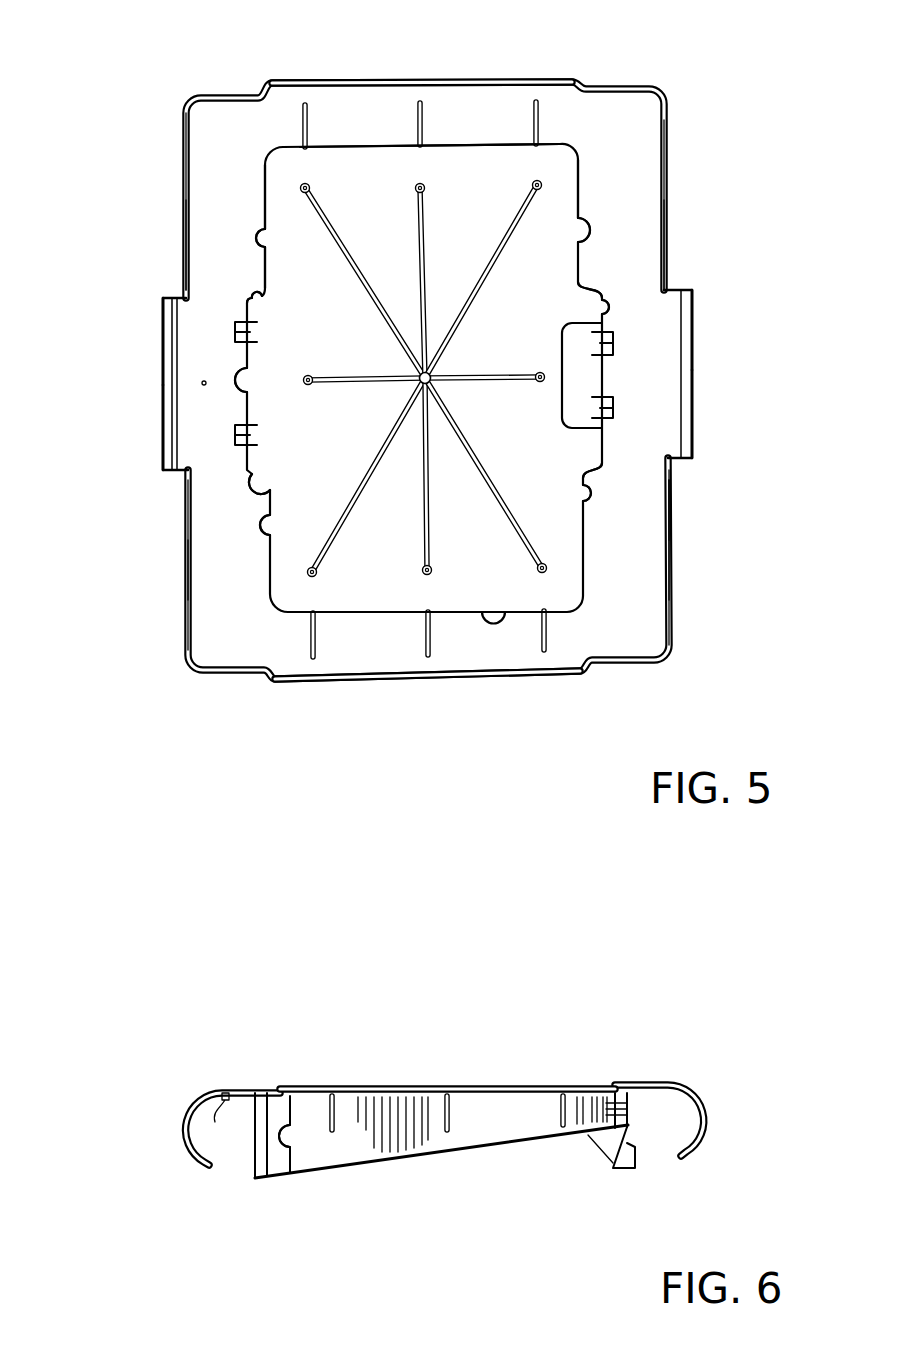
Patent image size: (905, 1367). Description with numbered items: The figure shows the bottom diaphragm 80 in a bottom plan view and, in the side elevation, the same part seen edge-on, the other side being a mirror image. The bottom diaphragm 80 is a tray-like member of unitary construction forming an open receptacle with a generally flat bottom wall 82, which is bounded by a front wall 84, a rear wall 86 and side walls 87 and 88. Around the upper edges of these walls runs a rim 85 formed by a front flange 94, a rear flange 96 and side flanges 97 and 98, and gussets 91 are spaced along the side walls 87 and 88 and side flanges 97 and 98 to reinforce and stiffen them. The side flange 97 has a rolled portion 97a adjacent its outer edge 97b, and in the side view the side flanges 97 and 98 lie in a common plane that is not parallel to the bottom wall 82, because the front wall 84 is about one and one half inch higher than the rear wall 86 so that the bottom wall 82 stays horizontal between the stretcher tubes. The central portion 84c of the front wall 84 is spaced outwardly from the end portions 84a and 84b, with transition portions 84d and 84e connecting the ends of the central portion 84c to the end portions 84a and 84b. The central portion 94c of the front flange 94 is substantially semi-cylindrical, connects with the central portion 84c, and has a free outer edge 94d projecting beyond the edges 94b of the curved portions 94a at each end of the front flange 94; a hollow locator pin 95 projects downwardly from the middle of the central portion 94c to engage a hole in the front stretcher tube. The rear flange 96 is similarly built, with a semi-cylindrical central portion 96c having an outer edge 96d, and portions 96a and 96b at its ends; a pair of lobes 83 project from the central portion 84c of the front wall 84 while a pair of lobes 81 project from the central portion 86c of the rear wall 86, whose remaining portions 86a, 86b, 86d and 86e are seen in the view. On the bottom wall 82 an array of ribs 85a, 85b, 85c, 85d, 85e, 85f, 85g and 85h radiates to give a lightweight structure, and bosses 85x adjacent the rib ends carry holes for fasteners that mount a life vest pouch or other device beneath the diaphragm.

In FIG. 5, the bottom diaphragm 80 is at (645, 68).
In FIG. 6, the bottom diaphragm 80 is at (351, 1082).
In FIG. 5, the lobes 81 is at (613, 348).
In FIG. 6, the lobes 81 is at (640, 1168).
In FIG. 5, the bottom wall 82 is at (350, 319).
In FIG. 6, the bottom wall 82 is at (292, 1178).
In FIG. 5, the lobes 83 is at (237, 322).
In FIG. 6, the lobes 83 is at (258, 1174).
In FIG. 5, the front wall 84 is at (265, 210).
In FIG. 6, the front wall 84 is at (272, 1135).
In FIG. 5, the end portion of front wall 84a is at (257, 244).
In FIG. 5, the end portion of front wall 84b is at (272, 530).
In FIG. 6, the end portion of front wall 84b is at (290, 1145).
In FIG. 5, the central portion of front wall 84c is at (255, 370).
In FIG. 6, the central portion of front wall 84c is at (258, 1147).
In FIG. 5, the transition portion of front wall 84d is at (262, 301).
In FIG. 5, the transition portion of front wall 84e is at (270, 490).
In FIG. 6, the transition portion of front wall 84e is at (265, 1092).
In FIG. 5, the rim 85 is at (647, 134).
In FIG. 6, the rim 85 is at (640, 1077).
In FIG. 5, the rib 85a is at (345, 520).
In FIG. 6, the rib 85a is at (380, 1170).
In FIG. 5, the rib 85b is at (500, 241).
In FIG. 5, the rib 85c is at (328, 226).
In FIG. 5, the rib 85d is at (480, 459).
In FIG. 6, the rib 85d is at (533, 1143).
In FIG. 5, the rib 85e is at (423, 487).
In FIG. 5, the rib 85f is at (420, 223).
In FIG. 5, the rib 85g is at (363, 382).
In FIG. 5, the right horizontal arm 85h is at (495, 381).
In FIG. 5, the bosses 85x is at (310, 184).
In FIG. 6, the bosses 85x is at (342, 1174).
In FIG. 5, the rear wall 86 is at (580, 197).
In FIG. 6, the rear wall 86 is at (630, 1118).
In FIG. 5, the right wall notch 86a is at (587, 244).
In FIG. 5, the right wall lower notch 86b is at (583, 488).
In FIG. 5, the central portion of rear wall 86c is at (600, 302).
In FIG. 5, the right wall step 86d is at (592, 286).
In FIG. 5, the right wall lower step 86e is at (598, 471).
In FIG. 6, the right wall lower step 86e is at (608, 1165).
In FIG. 5, the side wall 87 is at (378, 142).
In FIG. 6, the side wall 87 is at (492, 1108).
In FIG. 5, the side wall 88 is at (482, 612).
In FIG. 5, the gussets 91 is at (308, 116).
In FIG. 6, the gussets 91 is at (328, 1118).
In FIG. 5, the front flange 94 is at (222, 616).
In FIG. 6, the front flange 94 is at (238, 1094).
In FIG. 5, the curved portions of front flange 94a is at (210, 152).
In FIG. 6, the curved portions of front flange 94a is at (207, 1096).
In FIG. 5, the edges of curved portions 94b is at (180, 240).
In FIG. 6, the edges of curved portions 94b is at (174, 1098).
In FIG. 5, the central portion of front flange 94c is at (170, 356).
In FIG. 6, the central portion of front flange 94c is at (186, 1138).
In FIG. 5, the free outer edge 94d is at (170, 437).
In FIG. 6, the free outer edge 94d is at (199, 1162).
In FIG. 6, the locator pin 95 is at (214, 1123).
In FIG. 5, the rear flange 96 is at (627, 613).
In FIG. 6, the rear flange 96 is at (659, 1120).
In FIG. 5, the right rail upper portion 96a is at (645, 213).
In FIG. 6, the right rail upper portion 96a is at (697, 1094).
In FIG. 5, the right rail flange 96b is at (665, 243).
In FIG. 6, the right rail flange 96b is at (706, 1108).
In FIG. 5, the central portion of rear flange 96c is at (685, 375).
In FIG. 6, the central portion of rear flange 96c is at (703, 1135).
In FIG. 5, the outer edge of rear flange central portion 96d is at (690, 342).
In FIG. 6, the outer edge of rear flange central portion 96d is at (693, 1155).
In FIG. 5, the side flange 97 is at (270, 120).
In FIG. 6, the side flange 97 is at (472, 1088).
In FIG. 5, the rolled portion 97a is at (353, 94).
In FIG. 5, the outer edge 97b is at (480, 84).
In FIG. 5, the side flange 98 is at (456, 665).